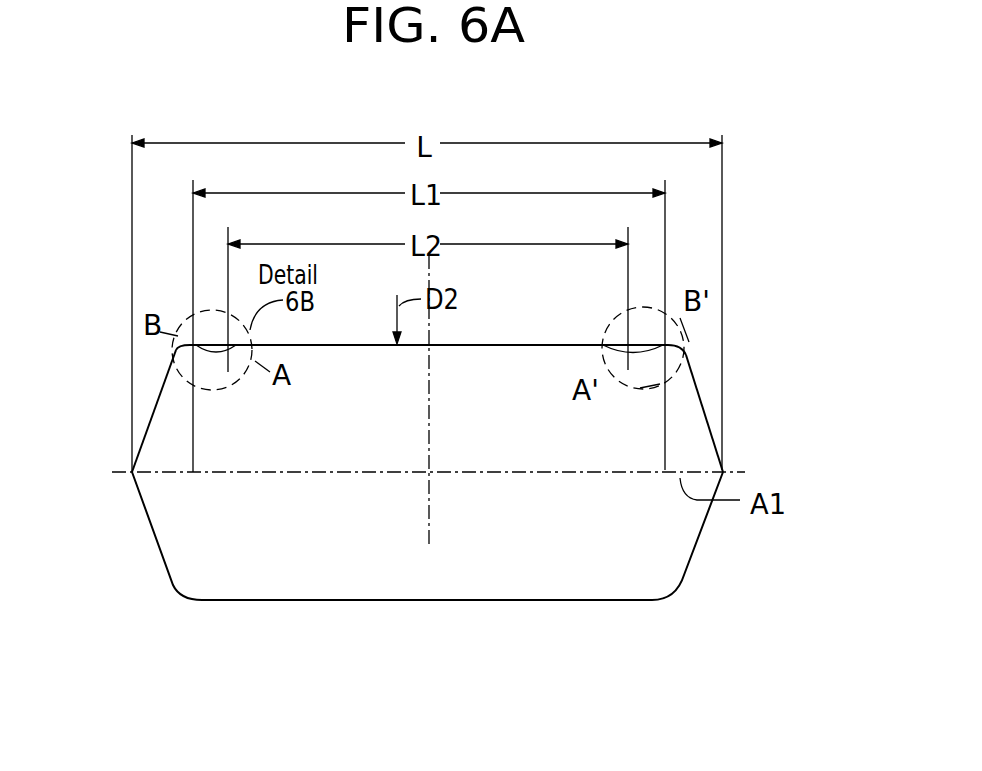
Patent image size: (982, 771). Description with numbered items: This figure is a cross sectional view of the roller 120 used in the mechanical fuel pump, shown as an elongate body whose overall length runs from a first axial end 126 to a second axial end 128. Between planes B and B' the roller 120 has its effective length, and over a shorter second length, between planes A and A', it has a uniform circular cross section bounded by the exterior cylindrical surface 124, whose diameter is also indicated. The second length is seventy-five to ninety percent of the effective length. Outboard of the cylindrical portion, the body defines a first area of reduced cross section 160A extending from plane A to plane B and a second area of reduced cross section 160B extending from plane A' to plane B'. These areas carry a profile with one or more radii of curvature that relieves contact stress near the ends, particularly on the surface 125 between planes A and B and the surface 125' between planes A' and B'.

The roller 120 is at (637, 572).
The exterior cylindrical surface 124 is at (477, 345).
The surface between plane A and plane B 125 is at (199, 326).
The surface between plane A' and plane B' 125' is at (663, 311).
The first axial end 126 is at (133, 472).
The second axial end 128 is at (723, 468).
The first area of reduced cross section 160A is at (213, 358).
The second area of reduced cross section 160B is at (645, 350).